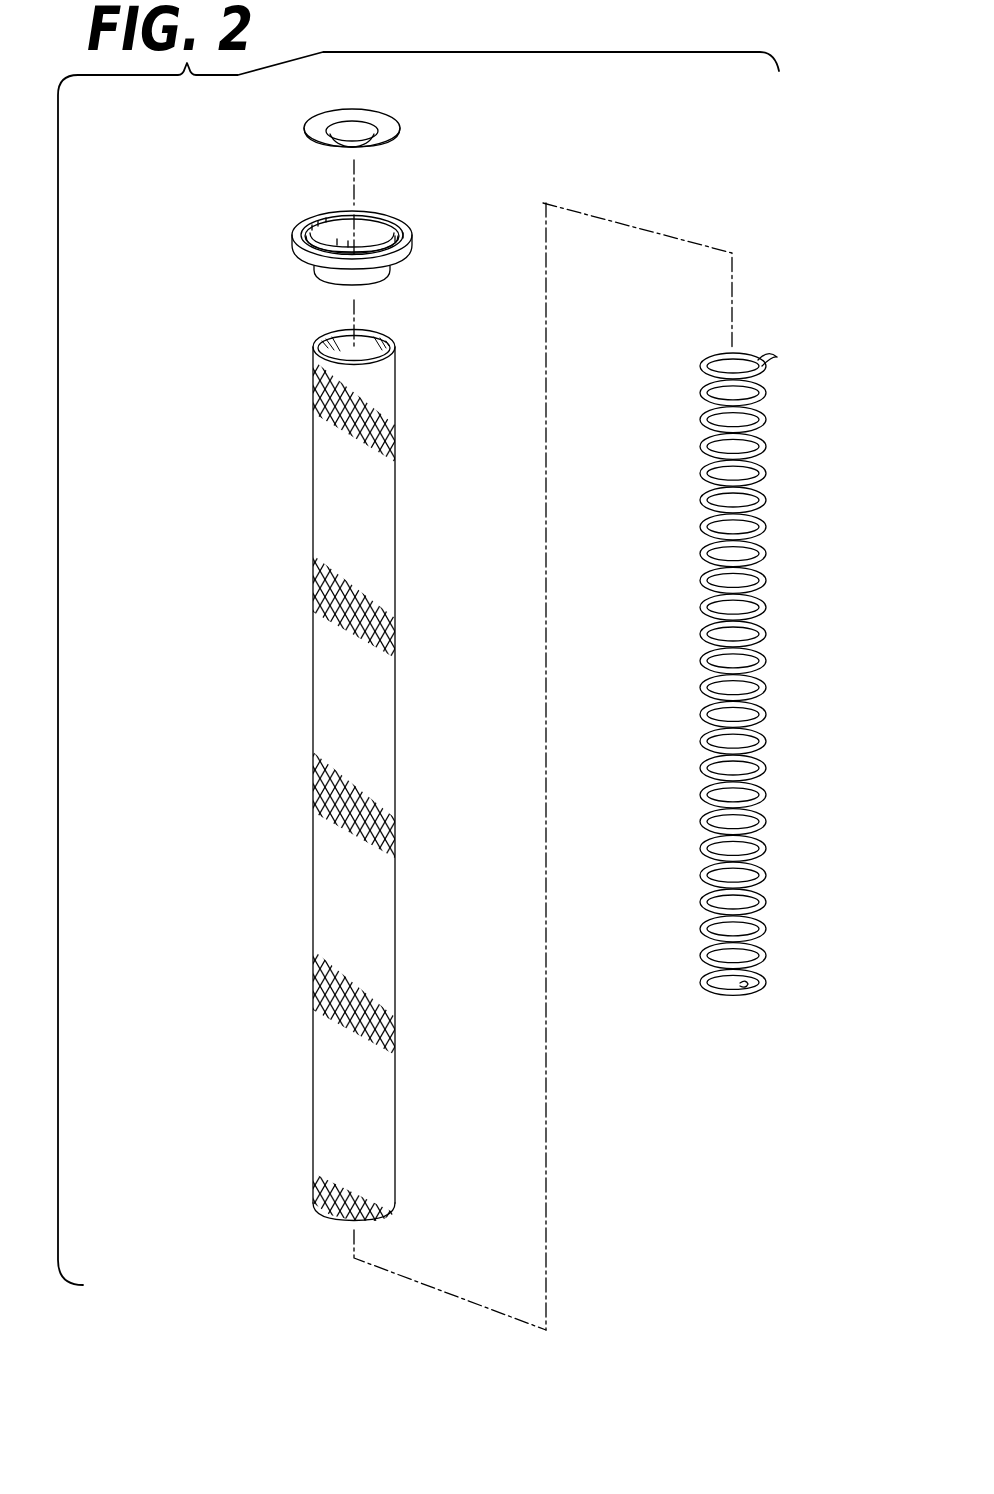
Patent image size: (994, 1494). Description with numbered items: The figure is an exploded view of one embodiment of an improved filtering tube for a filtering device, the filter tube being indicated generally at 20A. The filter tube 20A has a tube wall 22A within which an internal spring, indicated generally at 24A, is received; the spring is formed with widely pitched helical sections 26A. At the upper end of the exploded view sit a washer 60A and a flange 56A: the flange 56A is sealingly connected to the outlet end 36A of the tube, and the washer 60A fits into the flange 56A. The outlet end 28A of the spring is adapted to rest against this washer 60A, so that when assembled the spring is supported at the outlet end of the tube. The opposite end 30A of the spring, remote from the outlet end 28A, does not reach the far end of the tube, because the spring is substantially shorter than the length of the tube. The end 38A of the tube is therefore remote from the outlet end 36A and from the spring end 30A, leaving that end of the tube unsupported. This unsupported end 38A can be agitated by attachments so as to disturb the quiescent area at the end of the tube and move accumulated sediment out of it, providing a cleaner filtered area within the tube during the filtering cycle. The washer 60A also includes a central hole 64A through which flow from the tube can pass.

The filter tube 20A is at (220, 561).
The tube wall 22A is at (405, 754).
The internal spring 24A is at (723, 673).
The helical sections 26A is at (703, 689).
The outlet end of the spring 28A is at (777, 357).
The end of the spring remote from the outlet end 30A is at (725, 997).
The outlet end of the tube 36A is at (380, 338).
The end of the tube remote from the outlet end 38A is at (377, 1218).
The flange 56A is at (297, 252).
The washer 60A is at (334, 113).
The washer hole 64A is at (355, 138).